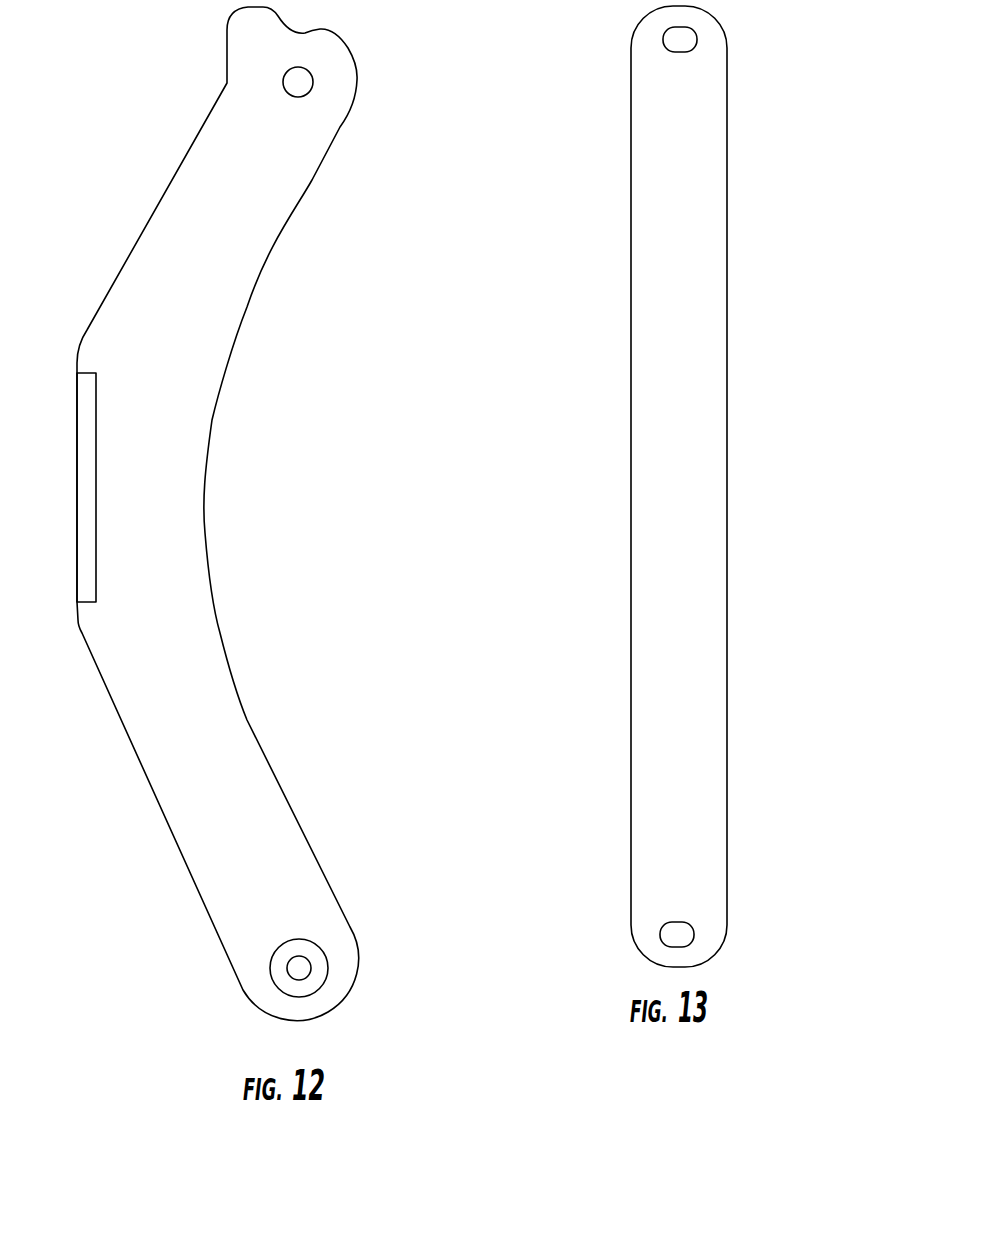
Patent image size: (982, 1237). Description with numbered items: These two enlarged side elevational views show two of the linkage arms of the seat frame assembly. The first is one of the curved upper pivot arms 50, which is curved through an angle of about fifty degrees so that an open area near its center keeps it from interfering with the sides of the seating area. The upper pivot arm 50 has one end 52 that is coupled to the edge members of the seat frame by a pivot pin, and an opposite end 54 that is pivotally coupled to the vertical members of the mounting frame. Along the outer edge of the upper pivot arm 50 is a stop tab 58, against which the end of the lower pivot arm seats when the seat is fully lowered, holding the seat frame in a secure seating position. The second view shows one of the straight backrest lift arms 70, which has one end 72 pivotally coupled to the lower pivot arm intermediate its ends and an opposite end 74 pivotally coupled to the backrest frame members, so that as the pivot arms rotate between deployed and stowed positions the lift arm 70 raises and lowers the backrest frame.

In FIG. 12, the upper pivot arm 50 is at (247, 705).
In FIG. 12, the end of pivot arm 52 is at (295, 888).
In FIG. 12, the opposite end of pivot arm 54 is at (343, 127).
In FIG. 12, the stop tab 58 is at (75, 475).
In FIG. 13, the lift arm 70 is at (703, 460).
In FIG. 13, the end of lift arm 72 is at (693, 931).
In FIG. 13, the opposite end of lift arm 74 is at (690, 50).